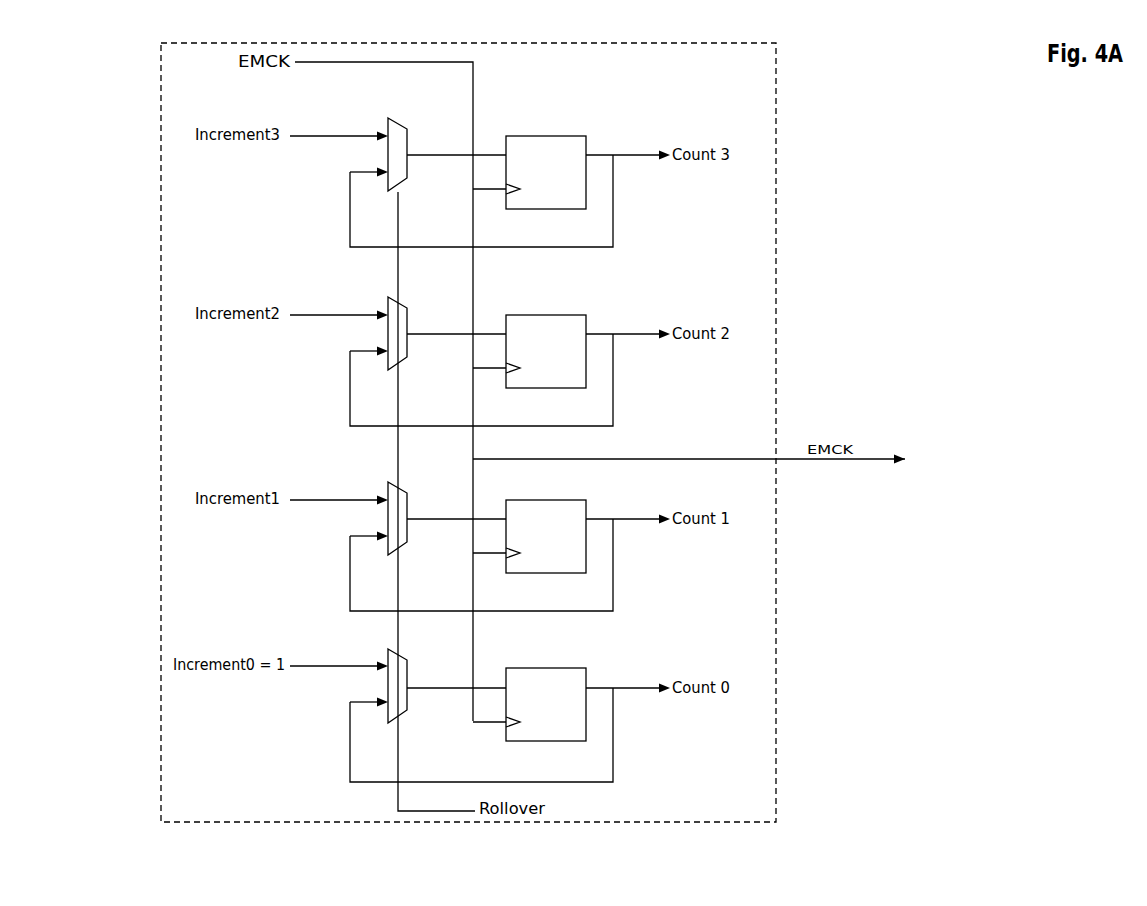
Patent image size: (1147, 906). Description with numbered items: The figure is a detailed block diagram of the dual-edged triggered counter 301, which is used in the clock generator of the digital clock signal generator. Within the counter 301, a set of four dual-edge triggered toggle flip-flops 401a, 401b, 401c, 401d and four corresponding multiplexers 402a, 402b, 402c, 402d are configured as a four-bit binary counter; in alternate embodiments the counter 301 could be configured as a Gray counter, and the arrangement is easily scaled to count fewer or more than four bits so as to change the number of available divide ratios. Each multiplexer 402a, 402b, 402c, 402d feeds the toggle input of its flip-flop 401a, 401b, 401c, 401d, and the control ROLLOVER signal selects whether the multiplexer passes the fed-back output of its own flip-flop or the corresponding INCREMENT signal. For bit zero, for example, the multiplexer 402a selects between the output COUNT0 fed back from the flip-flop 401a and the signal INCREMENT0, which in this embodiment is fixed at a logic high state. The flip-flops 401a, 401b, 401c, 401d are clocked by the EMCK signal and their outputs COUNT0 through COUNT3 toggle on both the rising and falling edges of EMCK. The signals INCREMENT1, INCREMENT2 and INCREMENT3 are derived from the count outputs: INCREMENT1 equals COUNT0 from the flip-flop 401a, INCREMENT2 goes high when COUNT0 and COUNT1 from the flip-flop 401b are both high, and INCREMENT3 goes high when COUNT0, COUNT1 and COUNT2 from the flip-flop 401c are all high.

The dual-edged triggered counter 301 is at (785, 126).
The dual-edge triggered toggle flip-flop 401a is at (556, 663).
The dual-edge triggered toggle flip-flop 401b is at (556, 497).
The dual-edge triggered toggle flip-flop 401c is at (556, 313).
The dual-edge triggered toggle flip-flop 401d is at (556, 134).
The multiplexer 402a is at (419, 658).
The multiplexer 402b is at (419, 492).
The multiplexer 402c is at (419, 306).
The multiplexer 402d is at (399, 117).